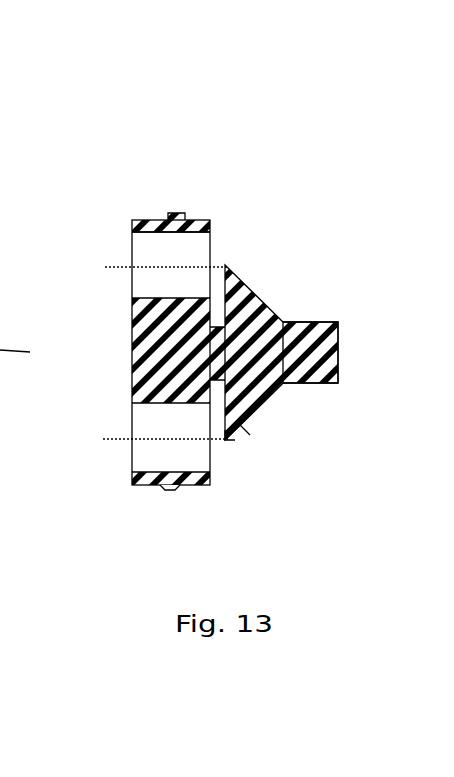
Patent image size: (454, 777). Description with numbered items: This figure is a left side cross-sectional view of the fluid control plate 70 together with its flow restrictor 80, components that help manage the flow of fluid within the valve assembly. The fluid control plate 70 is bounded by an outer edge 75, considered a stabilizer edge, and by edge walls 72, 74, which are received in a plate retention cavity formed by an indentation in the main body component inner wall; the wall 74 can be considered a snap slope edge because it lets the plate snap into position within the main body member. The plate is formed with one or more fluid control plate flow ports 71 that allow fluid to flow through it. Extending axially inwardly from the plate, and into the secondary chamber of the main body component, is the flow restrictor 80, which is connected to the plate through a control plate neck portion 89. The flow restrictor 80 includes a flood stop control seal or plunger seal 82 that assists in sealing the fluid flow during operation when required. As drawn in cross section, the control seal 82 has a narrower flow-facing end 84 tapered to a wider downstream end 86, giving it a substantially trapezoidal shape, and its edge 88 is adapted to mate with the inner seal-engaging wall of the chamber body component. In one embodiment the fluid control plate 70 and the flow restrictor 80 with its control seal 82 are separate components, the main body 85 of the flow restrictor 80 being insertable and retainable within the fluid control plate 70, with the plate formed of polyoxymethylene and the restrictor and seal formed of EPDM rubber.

The fluid control plate 70 is at (138, 93).
The fluid control plate flow port 71 is at (184, 247).
The edge wall 72 is at (190, 218).
The snap slope edge 74 is at (170, 487).
The stabilizer edge 75 is at (150, 218).
The flow restrictor 80 is at (311, 320).
The flood stop control seal 82 is at (364, 484).
The flow-facing end 84 is at (283, 402).
The main body of the flow restrictor 85 is at (150, 358).
The downstream end 86 is at (234, 452).
The edge of the control seal 88 is at (245, 430).
The control plate neck portion 89 is at (219, 341).